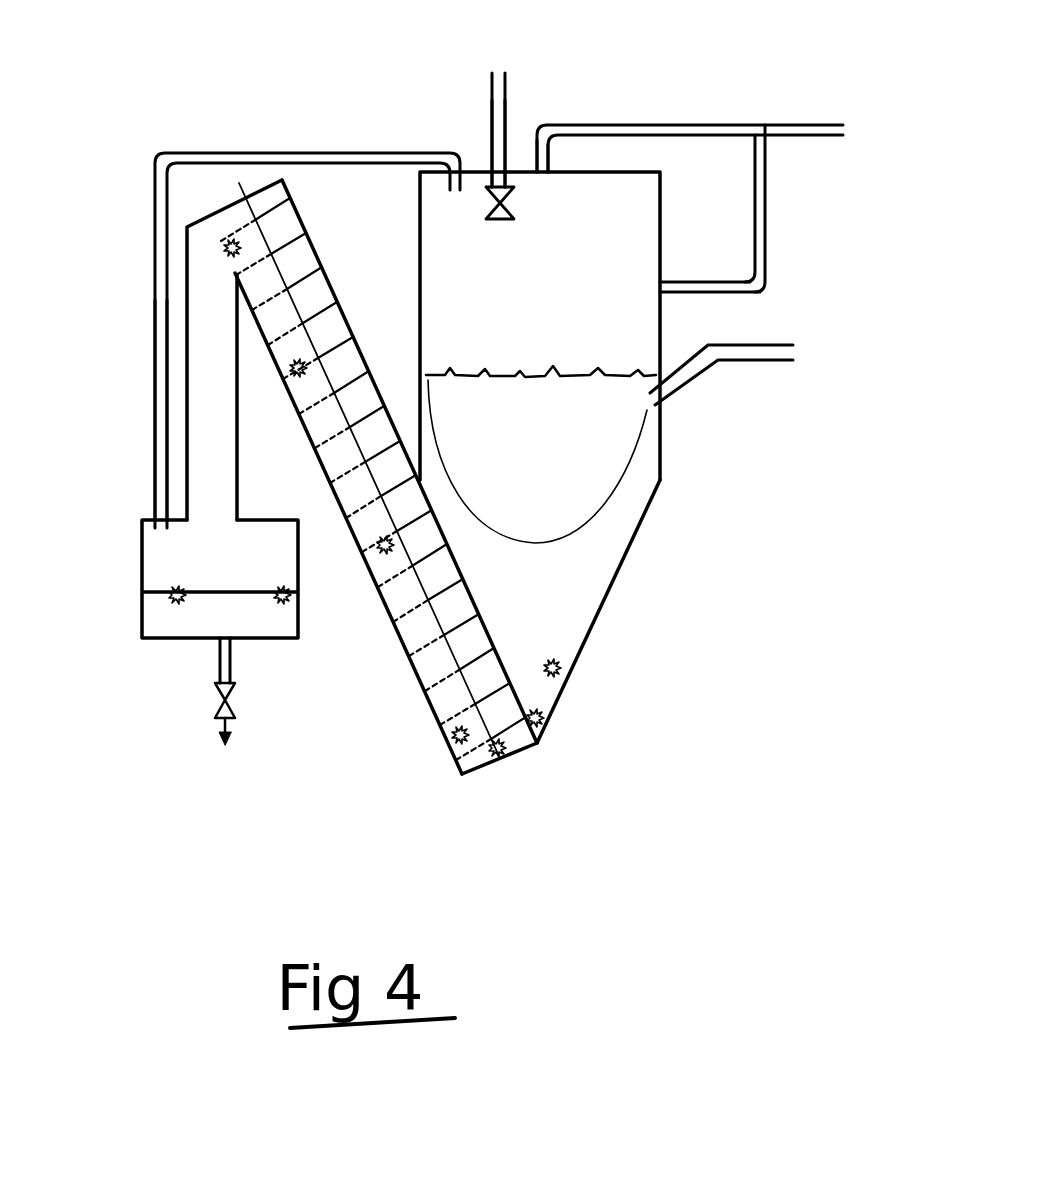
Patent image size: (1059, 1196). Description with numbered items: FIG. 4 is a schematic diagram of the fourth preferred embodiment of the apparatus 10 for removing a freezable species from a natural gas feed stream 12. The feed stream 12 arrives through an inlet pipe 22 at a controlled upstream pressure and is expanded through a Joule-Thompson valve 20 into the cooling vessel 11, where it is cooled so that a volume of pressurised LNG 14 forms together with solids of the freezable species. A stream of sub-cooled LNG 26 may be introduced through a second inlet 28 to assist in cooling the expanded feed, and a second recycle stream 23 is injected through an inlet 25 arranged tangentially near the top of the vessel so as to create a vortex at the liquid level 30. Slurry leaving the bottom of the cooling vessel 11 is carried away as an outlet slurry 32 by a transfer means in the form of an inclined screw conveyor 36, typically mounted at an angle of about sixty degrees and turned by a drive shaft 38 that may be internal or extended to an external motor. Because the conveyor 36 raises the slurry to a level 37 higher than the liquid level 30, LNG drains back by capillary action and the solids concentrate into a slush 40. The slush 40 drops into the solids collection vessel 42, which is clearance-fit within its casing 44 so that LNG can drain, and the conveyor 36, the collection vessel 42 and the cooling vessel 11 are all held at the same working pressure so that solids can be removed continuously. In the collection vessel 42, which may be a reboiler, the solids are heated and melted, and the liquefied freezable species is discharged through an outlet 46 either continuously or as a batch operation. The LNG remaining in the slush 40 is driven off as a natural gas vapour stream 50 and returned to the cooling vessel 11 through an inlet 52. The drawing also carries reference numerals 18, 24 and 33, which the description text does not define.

The apparatus 10 is at (652, 381).
The cooling vessel 11 is at (662, 208).
The natural gas feed stream 12 is at (505, 82).
The pressurised LNG 14 is at (618, 581).
The inlet pipe 18 is at (492, 172).
The Joule-Thompson valve 20 is at (490, 183).
The inlet pipe 22 is at (697, 123).
The second recycle stream 23 is at (765, 243).
The pipe inlet 24 is at (550, 167).
The inlet 25 is at (665, 295).
The sub-cooled LNG stream 26 is at (548, 527).
The second inlet 28 is at (660, 410).
The liquid level 30 is at (517, 372).
The outlet slurry 32 is at (520, 733).
The settled flocs 33 is at (567, 623).
The screw conveyor 36 is at (388, 613).
The level 37 is at (307, 230).
The drive shaft 38 is at (480, 760).
The slush 40 is at (232, 240).
The solids collection vessel 42 is at (142, 565).
The casing 44 is at (427, 703).
The outlet 46 is at (218, 650).
The natural gas vapour stream 50 is at (155, 378).
The inlet 52 is at (452, 165).